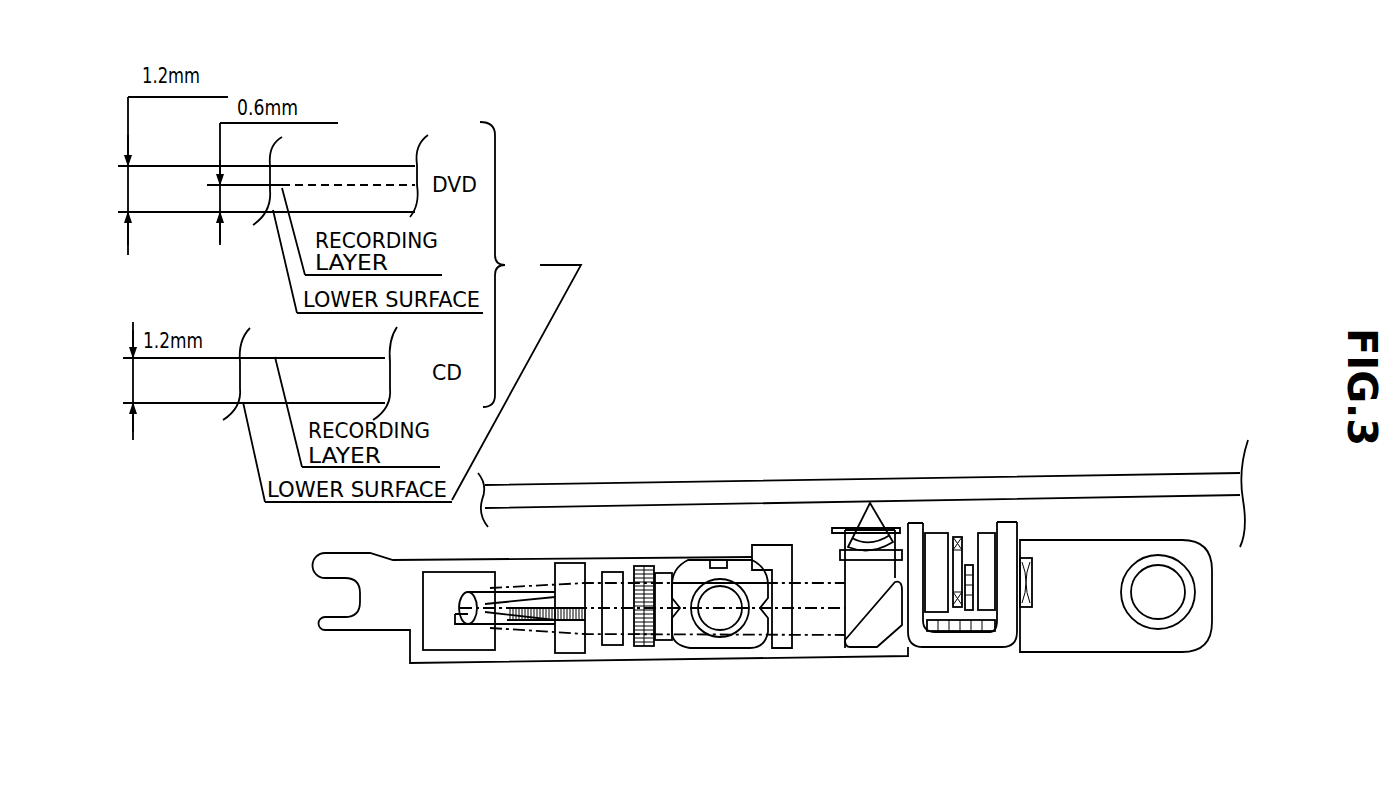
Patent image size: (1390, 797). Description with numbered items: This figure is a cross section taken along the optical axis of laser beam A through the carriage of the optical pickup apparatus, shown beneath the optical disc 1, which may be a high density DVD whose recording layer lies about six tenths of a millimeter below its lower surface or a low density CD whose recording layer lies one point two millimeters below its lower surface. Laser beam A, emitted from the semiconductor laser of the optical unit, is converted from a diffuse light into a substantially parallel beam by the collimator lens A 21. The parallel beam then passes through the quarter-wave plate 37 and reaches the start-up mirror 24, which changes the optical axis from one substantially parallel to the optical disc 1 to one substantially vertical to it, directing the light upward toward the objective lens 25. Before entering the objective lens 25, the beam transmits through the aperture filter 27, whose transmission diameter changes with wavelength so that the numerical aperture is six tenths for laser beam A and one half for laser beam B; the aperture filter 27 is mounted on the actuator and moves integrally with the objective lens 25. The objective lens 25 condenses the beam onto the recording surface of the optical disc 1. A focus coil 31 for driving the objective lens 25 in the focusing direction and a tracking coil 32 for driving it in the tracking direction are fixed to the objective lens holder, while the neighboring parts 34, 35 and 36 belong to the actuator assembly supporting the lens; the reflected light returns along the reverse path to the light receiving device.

The optical disc 1 is at (1177, 482).
The collimator lens A 21 is at (572, 560).
The start-up mirror 24 is at (866, 635).
The objective lens 25 is at (866, 535).
The aperture filter 27 is at (840, 550).
The focus coil 31 is at (1026, 556).
The tracking coil 32 is at (957, 537).
The magnet 34 is at (930, 598).
The yoke 35 is at (1012, 640).
The actuator base 36 is at (967, 640).
The λ/4 plate 37 is at (782, 650).